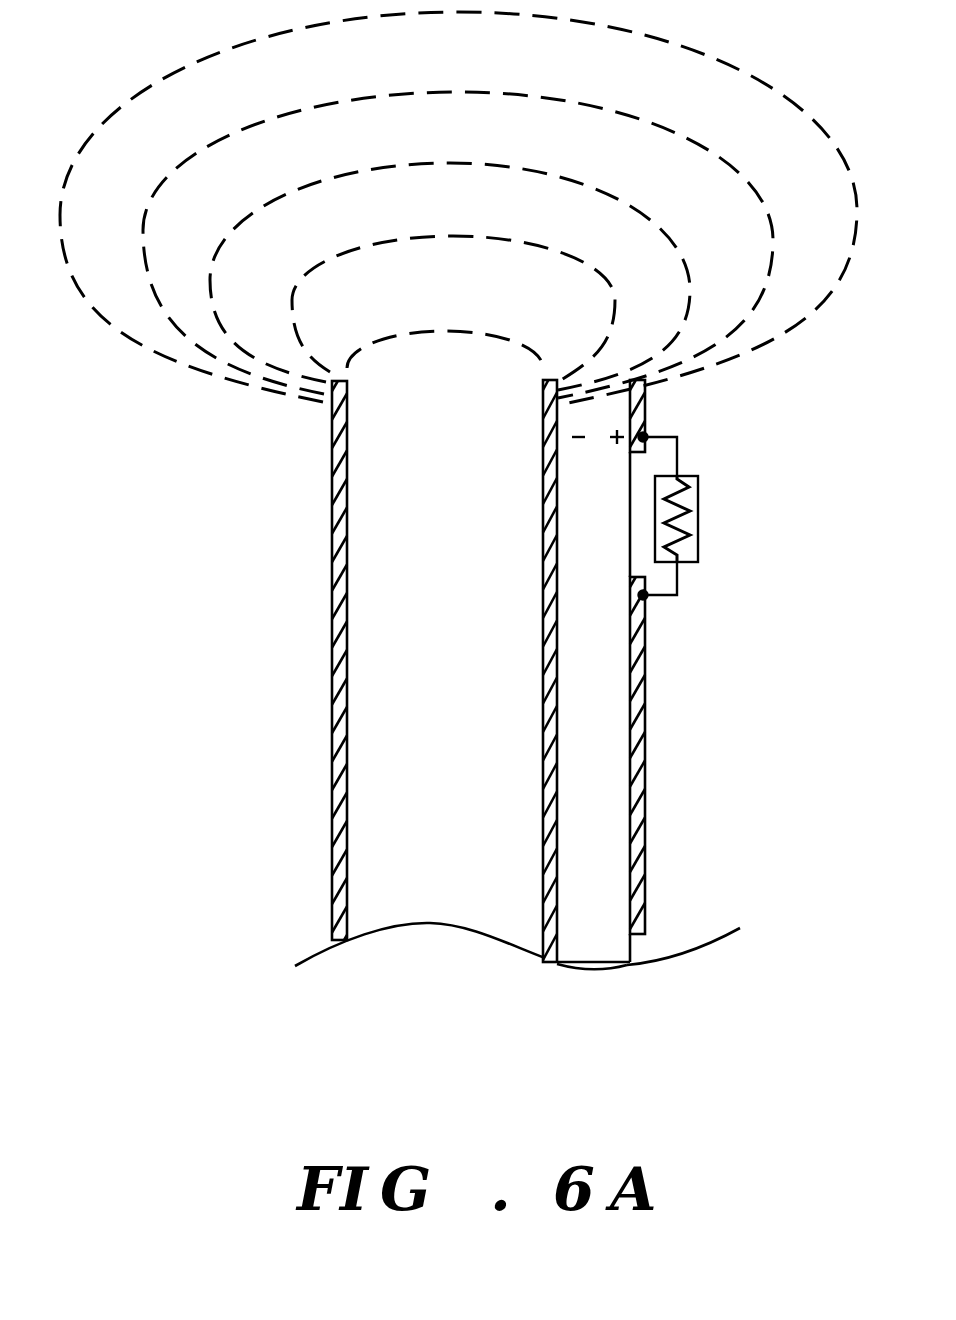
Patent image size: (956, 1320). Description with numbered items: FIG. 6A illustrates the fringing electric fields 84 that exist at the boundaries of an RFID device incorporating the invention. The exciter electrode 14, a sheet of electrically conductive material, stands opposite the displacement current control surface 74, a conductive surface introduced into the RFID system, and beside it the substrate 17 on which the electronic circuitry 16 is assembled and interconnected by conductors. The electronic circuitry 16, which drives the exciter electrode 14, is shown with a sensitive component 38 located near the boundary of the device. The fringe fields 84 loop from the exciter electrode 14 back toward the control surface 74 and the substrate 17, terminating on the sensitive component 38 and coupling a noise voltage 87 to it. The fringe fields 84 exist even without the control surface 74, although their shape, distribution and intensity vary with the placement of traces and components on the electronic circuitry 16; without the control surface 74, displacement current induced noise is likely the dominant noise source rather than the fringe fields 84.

The fringing electric fields 84 is at (733, 62).
The exciter electrode 14 is at (332, 778).
The displacement current control surface 74 is at (543, 888).
The substrate 17 is at (628, 964).
The sensitive component 38 is at (698, 540).
The noise voltage 87 is at (598, 465).
The electronic circuitry 16 is at (790, 1038).